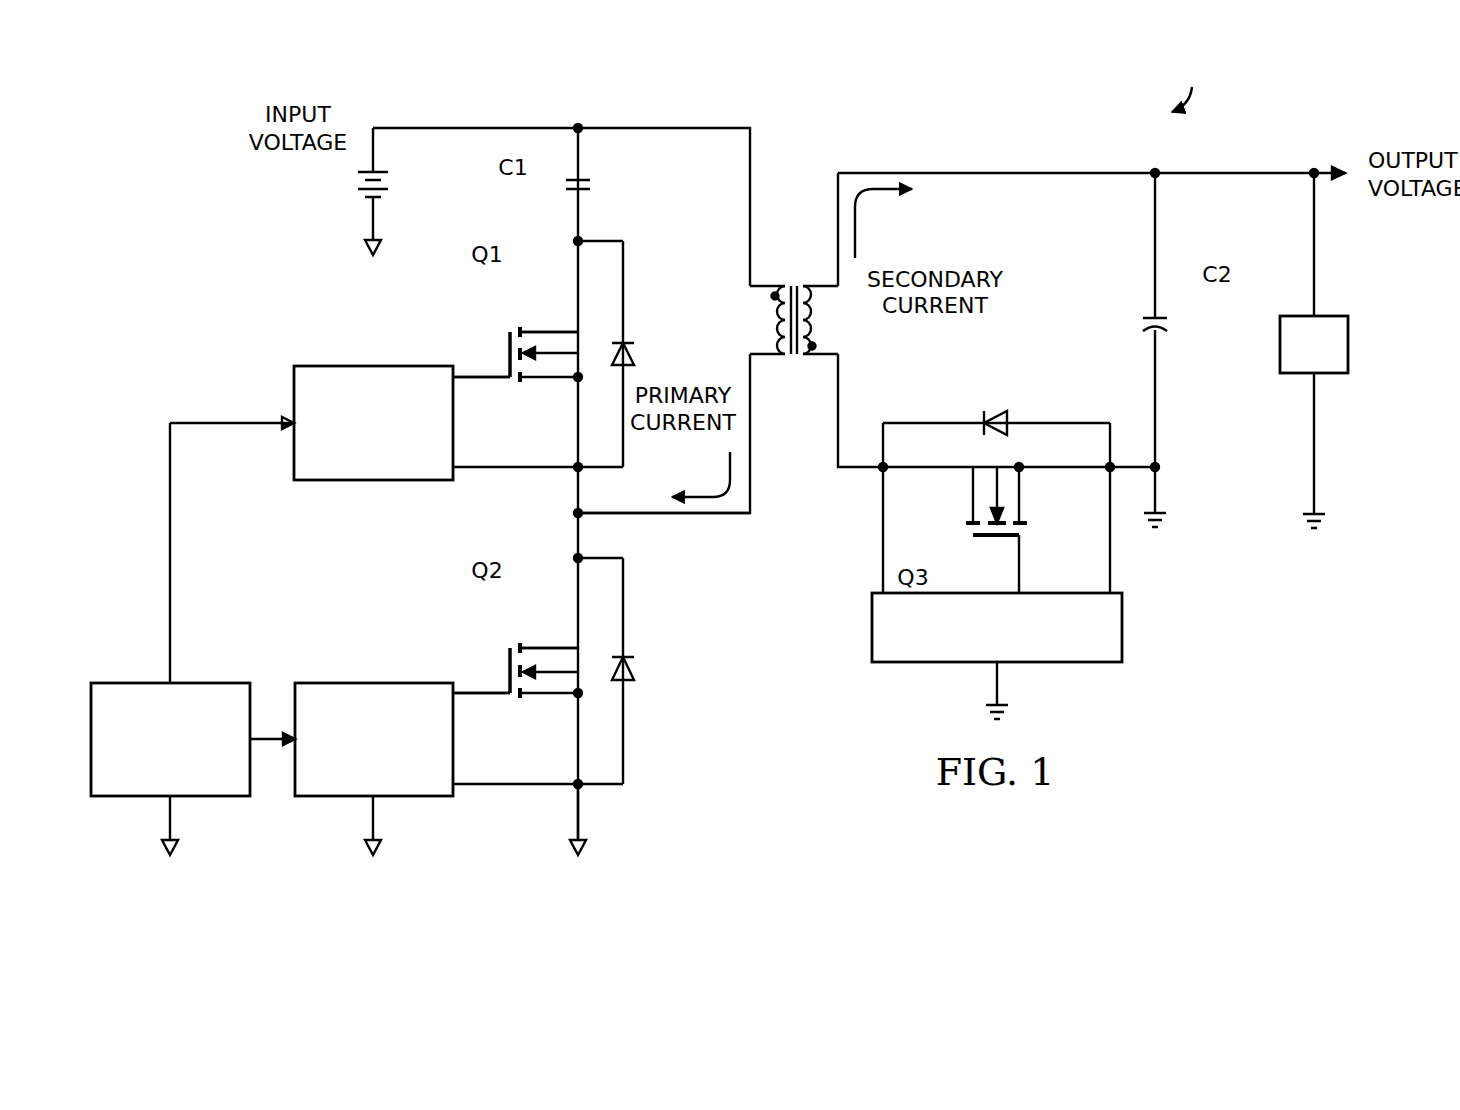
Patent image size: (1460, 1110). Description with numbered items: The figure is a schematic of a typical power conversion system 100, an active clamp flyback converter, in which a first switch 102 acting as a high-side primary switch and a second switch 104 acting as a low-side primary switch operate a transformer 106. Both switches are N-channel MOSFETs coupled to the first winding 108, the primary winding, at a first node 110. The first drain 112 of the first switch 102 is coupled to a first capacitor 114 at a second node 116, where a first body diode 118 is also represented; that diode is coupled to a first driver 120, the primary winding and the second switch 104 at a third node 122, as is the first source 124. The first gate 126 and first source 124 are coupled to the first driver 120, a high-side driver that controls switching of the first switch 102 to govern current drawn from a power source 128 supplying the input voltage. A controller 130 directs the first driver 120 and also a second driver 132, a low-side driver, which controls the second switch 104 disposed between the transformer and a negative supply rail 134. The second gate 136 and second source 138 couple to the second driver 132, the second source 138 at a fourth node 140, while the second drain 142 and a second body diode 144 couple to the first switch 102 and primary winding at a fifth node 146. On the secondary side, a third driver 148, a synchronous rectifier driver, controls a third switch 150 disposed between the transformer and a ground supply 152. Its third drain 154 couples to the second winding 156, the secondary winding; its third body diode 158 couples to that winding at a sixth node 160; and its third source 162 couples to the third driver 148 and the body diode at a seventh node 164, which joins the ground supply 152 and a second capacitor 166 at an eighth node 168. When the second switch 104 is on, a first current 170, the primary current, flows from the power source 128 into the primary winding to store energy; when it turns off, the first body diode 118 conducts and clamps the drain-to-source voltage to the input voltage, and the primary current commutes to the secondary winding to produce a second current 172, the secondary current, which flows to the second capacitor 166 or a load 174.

The power conversion system 100 is at (1197, 83).
The first switch 102 is at (508, 348).
The second switch 104 is at (507, 663).
The transformer 106 is at (794, 327).
The first winding 108 is at (785, 357).
The first node 110 is at (583, 518).
The first drain 112 is at (550, 330).
The first capacitor 114 is at (566, 185).
The second node 116 is at (583, 236).
The first body diode 118 is at (636, 355).
The first driver 120 is at (373, 365).
The third node 122 is at (572, 472).
The first source 124 is at (550, 382).
The first gate 126 is at (506, 368).
The power source 128 is at (354, 190).
The controller 130 is at (135, 797).
The second driver 132 is at (338, 797).
The negative supply rail 134 is at (178, 848).
The second gate 136 is at (506, 685).
The second source 138 is at (550, 699).
The fourth node 140 is at (570, 788).
The second drain 142 is at (550, 646).
The second body diode 144 is at (636, 670).
The fifth node 146 is at (574, 557).
The third driver 148 is at (1122, 625).
The third switch 150 is at (985, 538).
The ground supply 152 is at (1166, 520).
The third drain 154 is at (972, 496).
The second winding 156 is at (801, 358).
The third body diode 158 is at (1000, 419).
The sixth node 160 is at (878, 471).
The third source 162 is at (1022, 495).
The seventh node 164 is at (1118, 462).
The second capacitor 166 is at (1168, 322).
The eighth node 168 is at (1160, 464).
The first current 170 is at (730, 466).
The second current 172 is at (855, 225).
The load 174 is at (1350, 345).